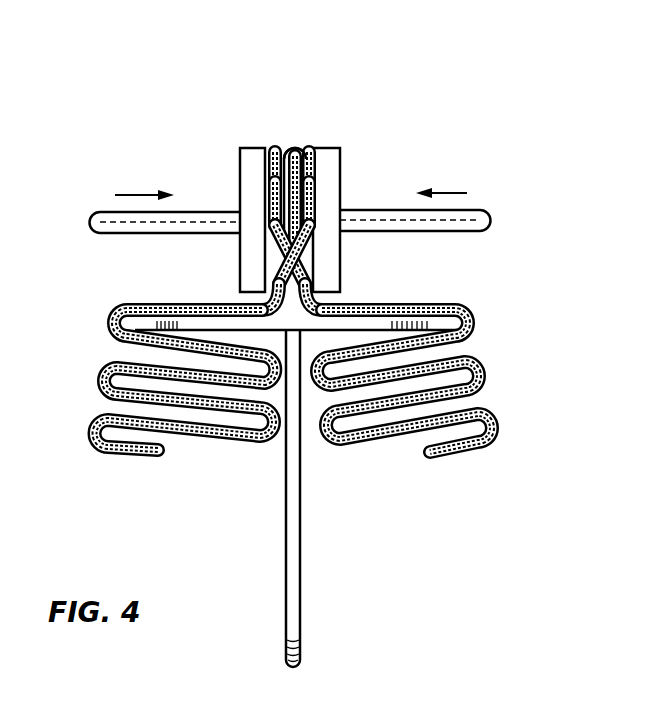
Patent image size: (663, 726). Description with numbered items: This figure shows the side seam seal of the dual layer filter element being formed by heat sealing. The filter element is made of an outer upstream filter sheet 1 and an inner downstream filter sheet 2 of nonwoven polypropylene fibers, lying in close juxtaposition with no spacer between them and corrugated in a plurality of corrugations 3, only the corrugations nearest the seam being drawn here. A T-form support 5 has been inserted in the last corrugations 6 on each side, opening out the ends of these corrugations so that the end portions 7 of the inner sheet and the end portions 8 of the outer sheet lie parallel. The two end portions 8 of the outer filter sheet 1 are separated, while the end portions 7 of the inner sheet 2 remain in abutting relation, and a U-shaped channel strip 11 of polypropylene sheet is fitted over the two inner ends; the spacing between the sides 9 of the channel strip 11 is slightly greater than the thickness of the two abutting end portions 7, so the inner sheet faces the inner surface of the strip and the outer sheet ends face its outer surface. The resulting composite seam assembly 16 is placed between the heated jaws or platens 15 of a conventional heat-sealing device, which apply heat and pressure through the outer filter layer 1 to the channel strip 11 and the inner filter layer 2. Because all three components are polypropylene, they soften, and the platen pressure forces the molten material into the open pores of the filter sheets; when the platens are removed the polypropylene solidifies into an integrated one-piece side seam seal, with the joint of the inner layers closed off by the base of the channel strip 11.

The outer upstream filter sheet 1 is at (283, 246).
The inner downstream filter sheet 2 is at (335, 303).
The corrugations 3 is at (482, 363).
The T-form support 5 is at (304, 558).
The last corrugations 6 is at (271, 277).
The end portions of inner filter sheet 7 is at (294, 150).
The end portions of outer filter sheet 8 is at (271, 150).
The sides of channel strip 9 is at (282, 190).
The U-shaped channel strip 11 is at (280, 148).
The heated jaws or platens 15 is at (236, 158).
The composite seam assembly 16 is at (318, 118).